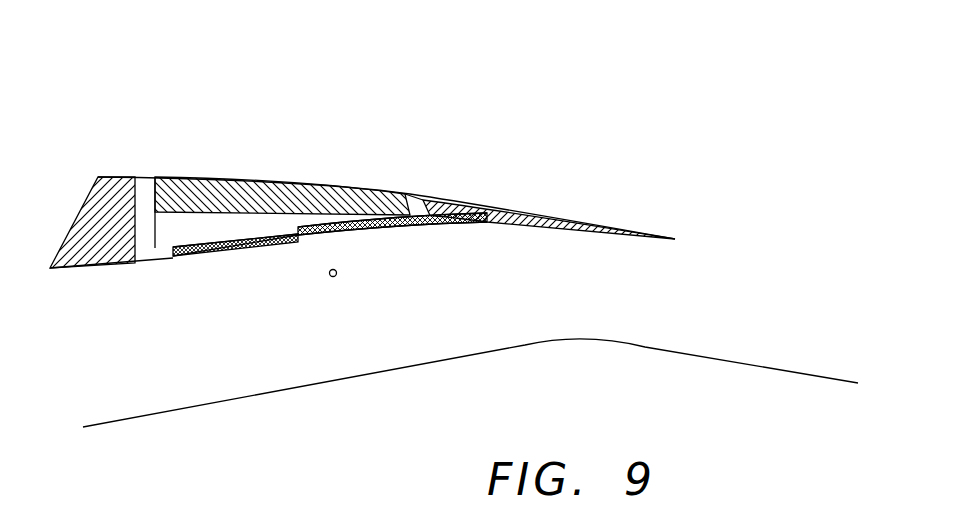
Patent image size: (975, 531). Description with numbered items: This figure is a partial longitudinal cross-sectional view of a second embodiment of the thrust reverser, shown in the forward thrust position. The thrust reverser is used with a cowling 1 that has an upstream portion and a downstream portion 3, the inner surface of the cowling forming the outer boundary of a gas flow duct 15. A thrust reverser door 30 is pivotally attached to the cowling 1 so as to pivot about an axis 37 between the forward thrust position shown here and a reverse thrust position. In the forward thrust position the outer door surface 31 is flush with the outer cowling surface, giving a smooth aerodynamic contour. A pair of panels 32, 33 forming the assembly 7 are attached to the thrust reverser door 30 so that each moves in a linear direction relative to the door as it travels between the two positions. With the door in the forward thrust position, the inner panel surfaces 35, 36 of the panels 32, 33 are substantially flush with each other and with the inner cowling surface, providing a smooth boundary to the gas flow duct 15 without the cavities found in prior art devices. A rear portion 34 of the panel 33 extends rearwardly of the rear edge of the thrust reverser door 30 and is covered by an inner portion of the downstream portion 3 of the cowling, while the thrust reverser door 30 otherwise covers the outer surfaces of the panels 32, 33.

The cowling 1 is at (92, 228).
The downstream portion 3 is at (522, 214).
The laminated assembly 7 is at (190, 43).
The thrust reverser door 30 is at (235, 187).
The outer door surface 31 is at (363, 187).
The panel 32 is at (247, 242).
The panel 33 is at (357, 225).
The rear portion 34 is at (452, 214).
The inner panel surface 35 is at (213, 256).
The inner panel surface 36 is at (407, 229).
The axis 37 is at (337, 276).
The gas flow duct 15 is at (145, 344).